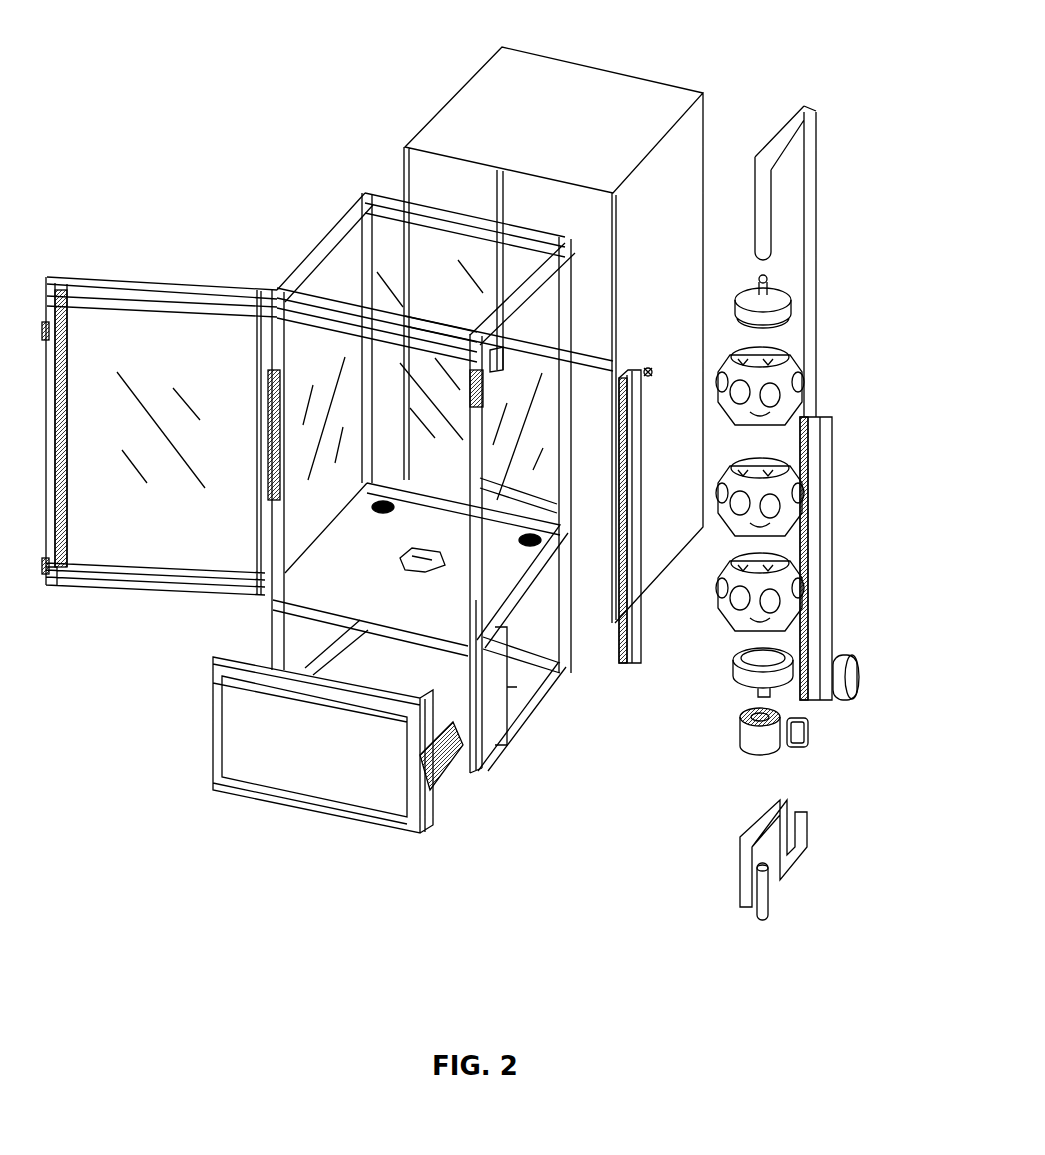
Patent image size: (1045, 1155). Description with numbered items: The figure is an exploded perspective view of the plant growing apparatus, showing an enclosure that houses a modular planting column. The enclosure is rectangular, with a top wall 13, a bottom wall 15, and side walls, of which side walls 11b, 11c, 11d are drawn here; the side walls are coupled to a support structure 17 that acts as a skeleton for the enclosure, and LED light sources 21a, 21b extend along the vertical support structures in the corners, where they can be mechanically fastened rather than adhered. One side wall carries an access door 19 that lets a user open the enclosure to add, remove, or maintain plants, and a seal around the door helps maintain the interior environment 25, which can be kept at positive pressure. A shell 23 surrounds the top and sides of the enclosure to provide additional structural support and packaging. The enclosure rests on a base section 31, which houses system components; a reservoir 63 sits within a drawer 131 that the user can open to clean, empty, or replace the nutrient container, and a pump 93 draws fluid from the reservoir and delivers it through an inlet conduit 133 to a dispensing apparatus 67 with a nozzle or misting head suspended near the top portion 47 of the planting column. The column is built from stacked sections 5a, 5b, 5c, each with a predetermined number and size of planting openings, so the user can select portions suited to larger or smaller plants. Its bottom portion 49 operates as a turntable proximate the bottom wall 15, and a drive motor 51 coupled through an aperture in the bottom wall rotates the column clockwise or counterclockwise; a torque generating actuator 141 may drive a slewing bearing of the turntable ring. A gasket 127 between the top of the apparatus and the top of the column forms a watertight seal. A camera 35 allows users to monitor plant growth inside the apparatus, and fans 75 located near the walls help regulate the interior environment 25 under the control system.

The top wall 13 is at (425, 293).
The support structure 17 is at (330, 242).
The side wall 11b is at (403, 445).
The side wall 11c is at (533, 470).
The side wall 11d is at (135, 348).
The access door 19 is at (163, 287).
The shell 23 is at (443, 106).
The bottom wall 15 is at (355, 570).
The interior environment 25 is at (410, 500).
The fans 75 is at (535, 543).
The base section 31 is at (517, 687).
The drawer 131 is at (417, 832).
The reservoir 63 is at (427, 698).
The camera 35 is at (650, 372).
The light source 21a is at (637, 447).
The light source 21b is at (828, 483).
The dispensing apparatus 67 is at (790, 120).
The top portion 47 is at (792, 301).
The planting column section 5a is at (797, 399).
The planting column section 5b is at (740, 525).
The planting column section 5c is at (725, 596).
The bottom portion 49 is at (743, 673).
The pump 93 is at (853, 678).
The drive motor 51 is at (773, 748).
The torque generating actuator 141 is at (808, 725).
The inlet conduit 133 is at (805, 847).
The gasket 127 is at (767, 903).